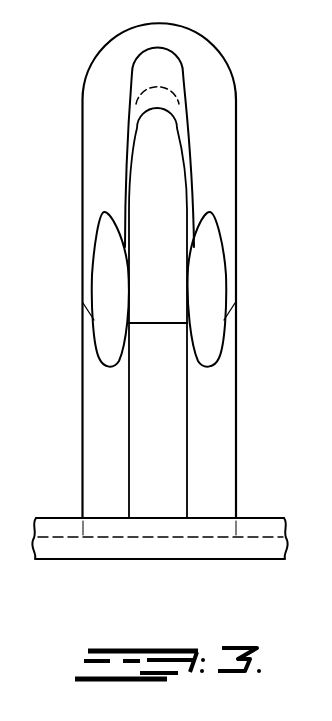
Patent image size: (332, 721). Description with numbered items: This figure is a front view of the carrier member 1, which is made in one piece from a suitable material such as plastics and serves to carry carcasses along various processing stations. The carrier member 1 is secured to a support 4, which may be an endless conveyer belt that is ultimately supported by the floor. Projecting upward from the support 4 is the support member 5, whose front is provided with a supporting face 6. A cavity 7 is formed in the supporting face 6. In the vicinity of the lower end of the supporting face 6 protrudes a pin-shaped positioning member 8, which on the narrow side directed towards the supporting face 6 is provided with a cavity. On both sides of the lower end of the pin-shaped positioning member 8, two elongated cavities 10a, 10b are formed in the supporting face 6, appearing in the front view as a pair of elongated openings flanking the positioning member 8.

The carrier member 1 is at (265, 323).
The support 4 is at (260, 528).
The support member 5 is at (236, 134).
The supporting face 6 is at (208, 70).
The cavity 7 is at (190, 167).
The pin-shaped positioning member 8 is at (150, 165).
The elongated cavity 10a is at (103, 285).
The elongated cavity 10b is at (212, 337).